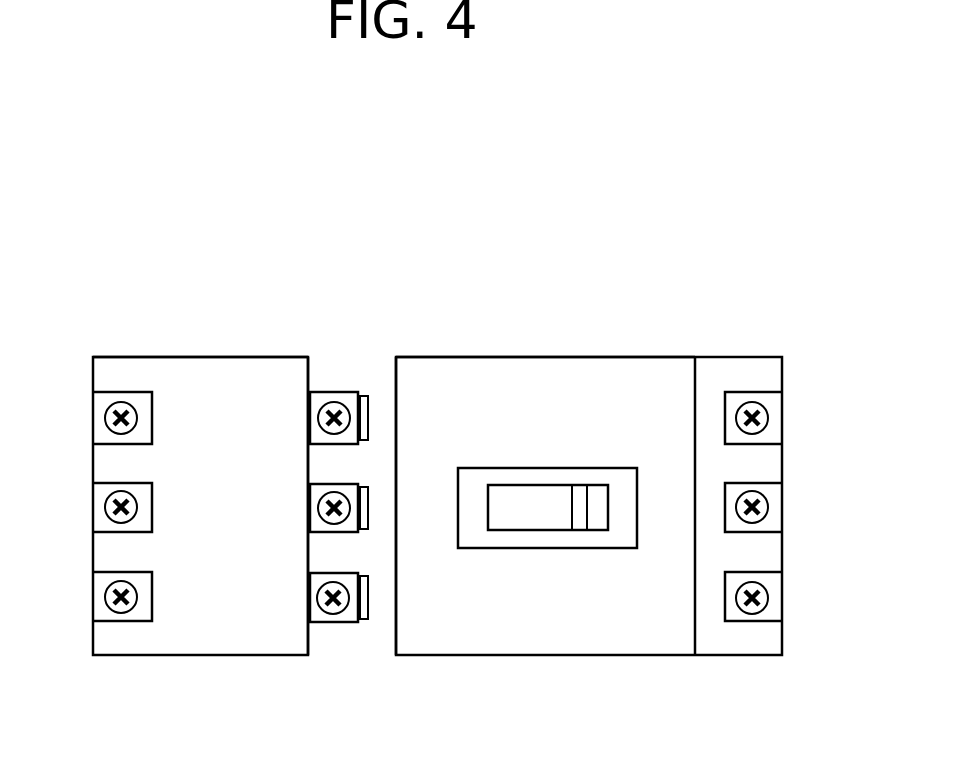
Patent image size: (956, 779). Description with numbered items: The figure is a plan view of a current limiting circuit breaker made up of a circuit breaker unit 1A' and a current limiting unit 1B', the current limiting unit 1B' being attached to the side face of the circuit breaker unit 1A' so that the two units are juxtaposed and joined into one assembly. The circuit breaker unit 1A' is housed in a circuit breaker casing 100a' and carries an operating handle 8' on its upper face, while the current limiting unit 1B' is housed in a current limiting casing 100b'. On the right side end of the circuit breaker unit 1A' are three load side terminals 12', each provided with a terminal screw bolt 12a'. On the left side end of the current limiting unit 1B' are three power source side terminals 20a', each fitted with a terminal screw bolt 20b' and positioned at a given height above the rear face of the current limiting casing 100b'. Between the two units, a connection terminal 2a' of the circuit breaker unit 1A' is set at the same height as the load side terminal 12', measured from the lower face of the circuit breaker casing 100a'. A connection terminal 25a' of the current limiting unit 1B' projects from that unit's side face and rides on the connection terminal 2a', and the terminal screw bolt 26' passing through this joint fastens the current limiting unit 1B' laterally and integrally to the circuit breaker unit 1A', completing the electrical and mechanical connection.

The circuit breaker unit 1A' is at (589, 475).
The current limiting unit 1B' is at (200, 481).
The connection terminal 2a' is at (414, 508).
The operating handle 8' is at (547, 413).
The load side terminal 12' is at (799, 507).
The terminal screw bolt 12a' is at (799, 474).
The power source side terminal 20a' is at (77, 538).
The terminal screw bolt 20b' is at (80, 447).
The connection terminal 25a' is at (302, 523).
The terminal screw bolt 26' is at (309, 484).
The circuit breaker casing 100a' is at (545, 305).
The current limiting casing 100b' is at (200, 294).